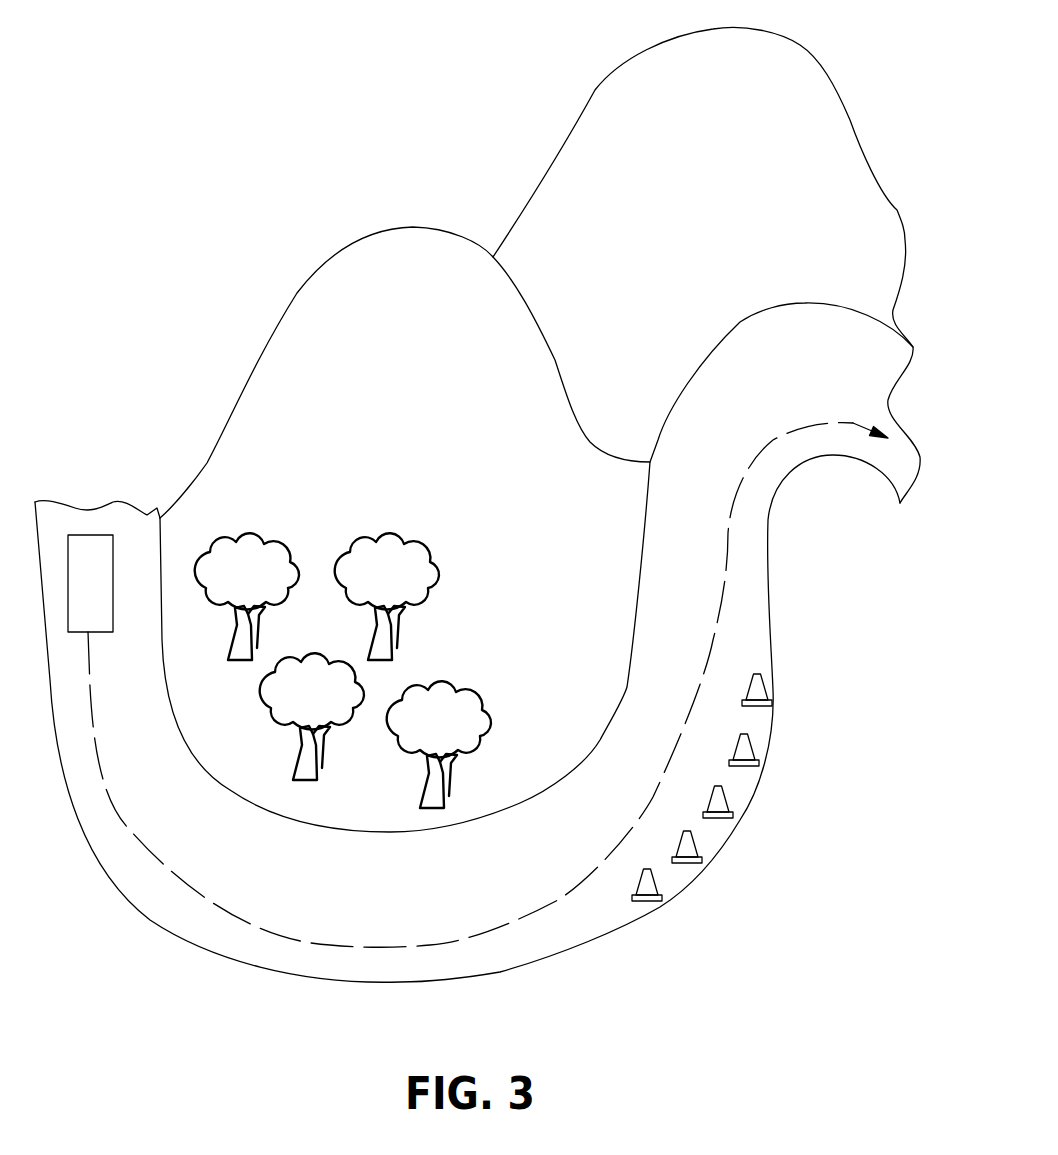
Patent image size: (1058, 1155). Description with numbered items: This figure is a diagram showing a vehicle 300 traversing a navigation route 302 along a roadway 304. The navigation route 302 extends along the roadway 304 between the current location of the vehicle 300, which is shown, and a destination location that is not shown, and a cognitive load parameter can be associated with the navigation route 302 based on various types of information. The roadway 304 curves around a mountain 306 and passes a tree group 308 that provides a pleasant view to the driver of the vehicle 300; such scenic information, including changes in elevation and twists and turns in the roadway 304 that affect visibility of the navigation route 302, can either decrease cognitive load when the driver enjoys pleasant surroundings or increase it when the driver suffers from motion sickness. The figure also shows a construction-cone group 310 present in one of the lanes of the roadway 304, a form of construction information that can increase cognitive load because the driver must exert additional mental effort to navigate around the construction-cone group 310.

The vehicle 300 is at (88, 535).
The navigation route 302 is at (815, 422).
The roadway 304 is at (238, 962).
The mountain 306 is at (410, 226).
The tree group 308 is at (330, 515).
The construction-cone group 310 is at (763, 805).